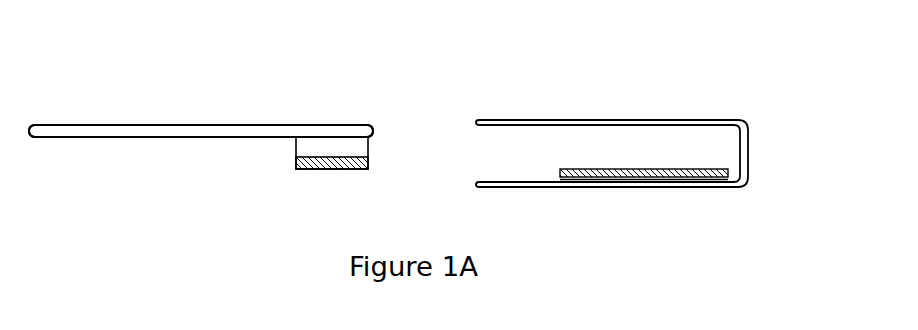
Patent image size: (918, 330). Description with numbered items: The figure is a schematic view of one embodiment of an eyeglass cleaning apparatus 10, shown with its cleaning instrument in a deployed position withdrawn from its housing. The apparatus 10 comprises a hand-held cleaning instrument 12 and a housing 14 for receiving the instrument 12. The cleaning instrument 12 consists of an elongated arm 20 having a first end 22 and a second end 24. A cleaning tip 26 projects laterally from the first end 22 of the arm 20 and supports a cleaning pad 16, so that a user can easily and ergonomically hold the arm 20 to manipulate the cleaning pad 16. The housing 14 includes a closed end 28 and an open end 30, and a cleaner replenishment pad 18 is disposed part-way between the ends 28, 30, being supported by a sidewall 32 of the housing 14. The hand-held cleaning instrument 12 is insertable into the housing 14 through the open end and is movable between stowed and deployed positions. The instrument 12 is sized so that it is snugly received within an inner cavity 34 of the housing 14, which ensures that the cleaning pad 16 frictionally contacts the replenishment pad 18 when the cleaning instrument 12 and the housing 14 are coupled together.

The eyeglass cleaning apparatus 10 is at (462, 37).
The hand-held cleaning instrument 12 is at (172, 86).
The housing 14 is at (746, 95).
The cleaning pad 16 is at (343, 170).
The cleaner replenishment pad 18 is at (633, 168).
The elongated arm 20 is at (203, 125).
The first end 22 is at (365, 124).
The second end 24 is at (36, 125).
The cleaning tip 26 is at (368, 148).
The closed end 28 is at (748, 150).
The open end 30 is at (483, 160).
The sidewall 32 is at (545, 187).
The inner cavity 34 is at (575, 148).